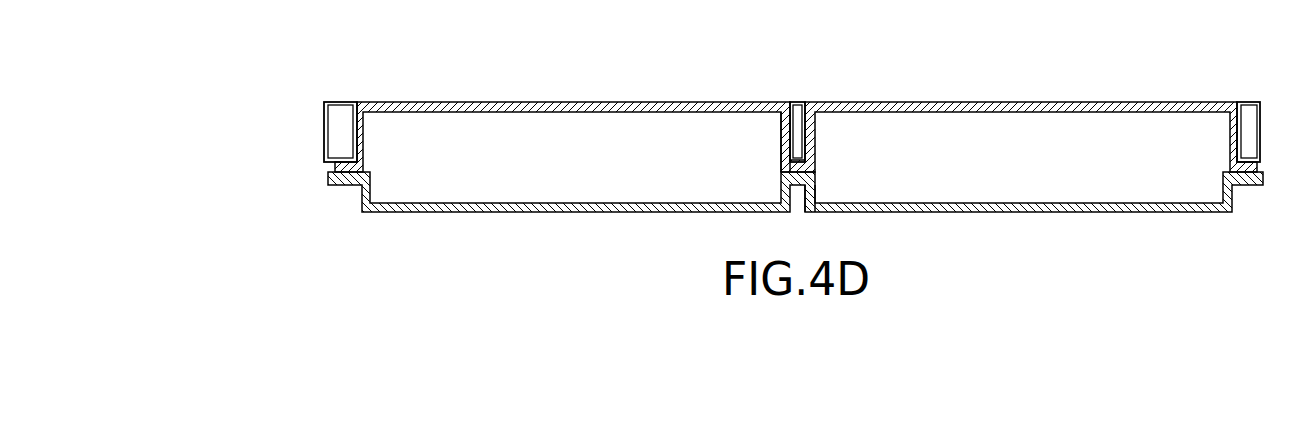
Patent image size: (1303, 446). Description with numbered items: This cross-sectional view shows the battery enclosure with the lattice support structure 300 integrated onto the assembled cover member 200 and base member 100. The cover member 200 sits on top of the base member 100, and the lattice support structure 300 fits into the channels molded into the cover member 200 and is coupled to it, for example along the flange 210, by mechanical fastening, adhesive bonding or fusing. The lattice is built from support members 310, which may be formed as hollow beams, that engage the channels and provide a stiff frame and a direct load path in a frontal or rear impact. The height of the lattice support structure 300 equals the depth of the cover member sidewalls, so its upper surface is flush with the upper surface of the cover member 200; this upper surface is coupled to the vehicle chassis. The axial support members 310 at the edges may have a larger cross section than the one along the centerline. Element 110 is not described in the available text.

The base member 100 is at (361, 234).
The side wall of first housing 110 is at (840, 188).
The cover member 200 is at (391, 72).
The flange 210 is at (758, 143).
The lattice support structure 300 is at (302, 134).
The support member 310 is at (787, 72).